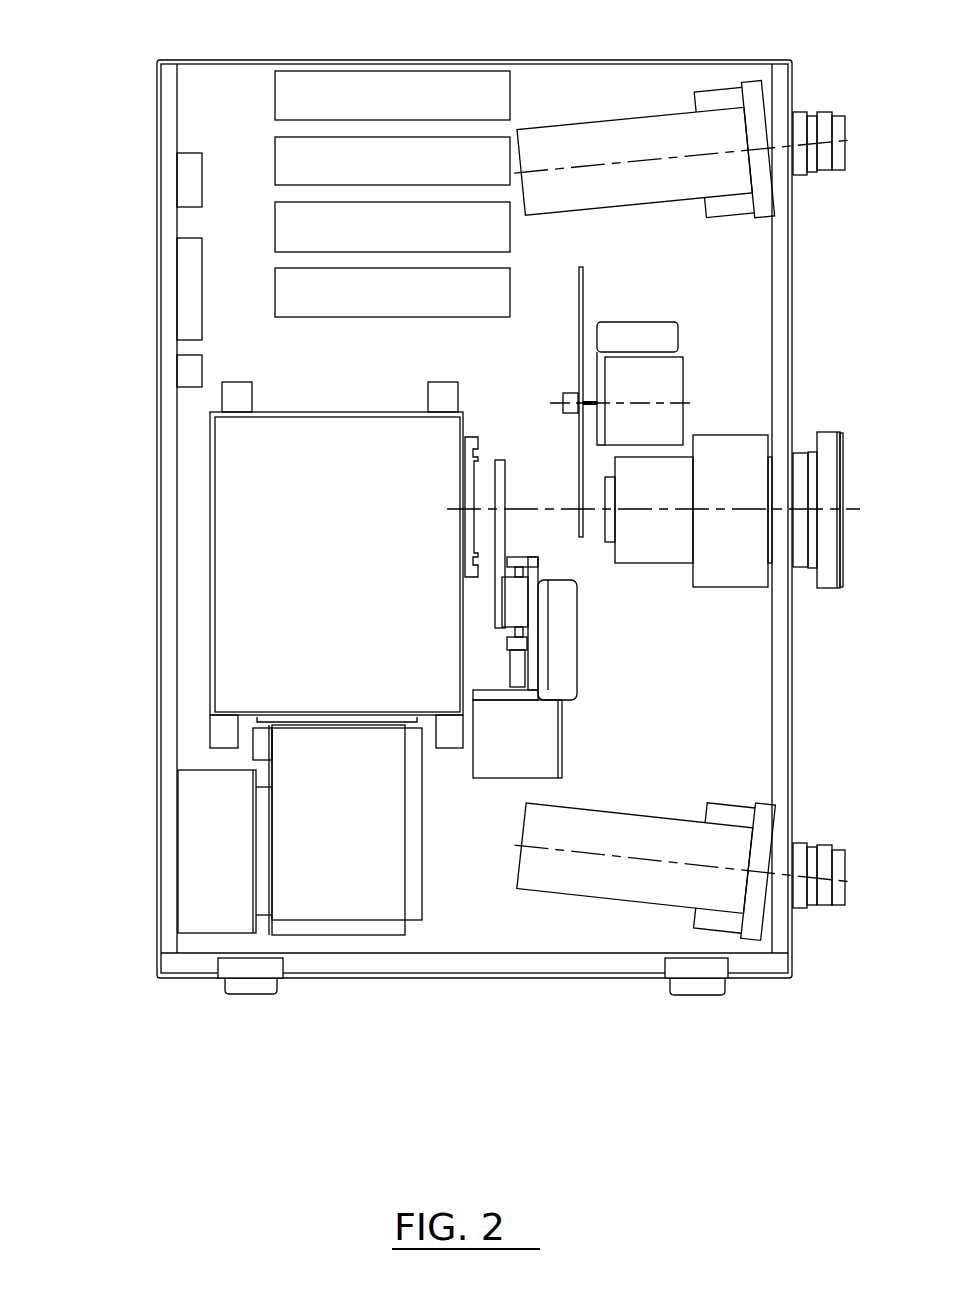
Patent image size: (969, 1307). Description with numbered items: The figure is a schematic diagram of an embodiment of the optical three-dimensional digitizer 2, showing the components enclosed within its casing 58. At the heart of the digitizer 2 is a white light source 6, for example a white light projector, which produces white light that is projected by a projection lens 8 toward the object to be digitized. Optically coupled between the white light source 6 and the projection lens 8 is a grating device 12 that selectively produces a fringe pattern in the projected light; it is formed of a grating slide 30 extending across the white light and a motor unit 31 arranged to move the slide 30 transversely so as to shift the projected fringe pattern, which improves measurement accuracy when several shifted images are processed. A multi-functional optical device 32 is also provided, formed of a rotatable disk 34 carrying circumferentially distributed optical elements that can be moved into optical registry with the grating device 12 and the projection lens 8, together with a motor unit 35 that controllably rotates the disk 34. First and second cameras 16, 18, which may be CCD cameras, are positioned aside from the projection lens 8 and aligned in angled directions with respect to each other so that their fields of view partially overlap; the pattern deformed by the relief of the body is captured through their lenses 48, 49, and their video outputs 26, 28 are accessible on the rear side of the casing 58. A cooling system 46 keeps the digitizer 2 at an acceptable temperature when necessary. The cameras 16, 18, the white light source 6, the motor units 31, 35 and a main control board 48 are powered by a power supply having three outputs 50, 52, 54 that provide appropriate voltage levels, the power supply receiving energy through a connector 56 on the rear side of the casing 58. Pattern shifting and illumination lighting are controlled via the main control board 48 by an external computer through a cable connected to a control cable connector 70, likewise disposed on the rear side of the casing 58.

The optical 3D digitizer 2 is at (420, 996).
The casing 58 is at (485, 60).
The power supply output 50 is at (275, 111).
The power supply output 52 is at (275, 176).
The power supply output 54 is at (275, 242).
The main control board 48 is at (332, 318).
The video output 26 is at (183, 190).
The video output 28 is at (148, 173).
The connector 56 is at (187, 293).
The control cable connector 70 is at (187, 374).
The white light source 6 is at (240, 475).
The cooling system 46 is at (195, 826).
The first camera 16 is at (567, 132).
The second camera 18 is at (549, 878).
The camera lens 49 is at (825, 912).
The rotatable disk 34 is at (585, 290).
The motor unit 35 is at (665, 328).
The multi-functional optical device 32 is at (697, 399).
The projection lens 8 is at (835, 585).
The grating device 12 is at (597, 668).
The grating slide 30 is at (500, 477).
The motor unit 31 is at (577, 596).